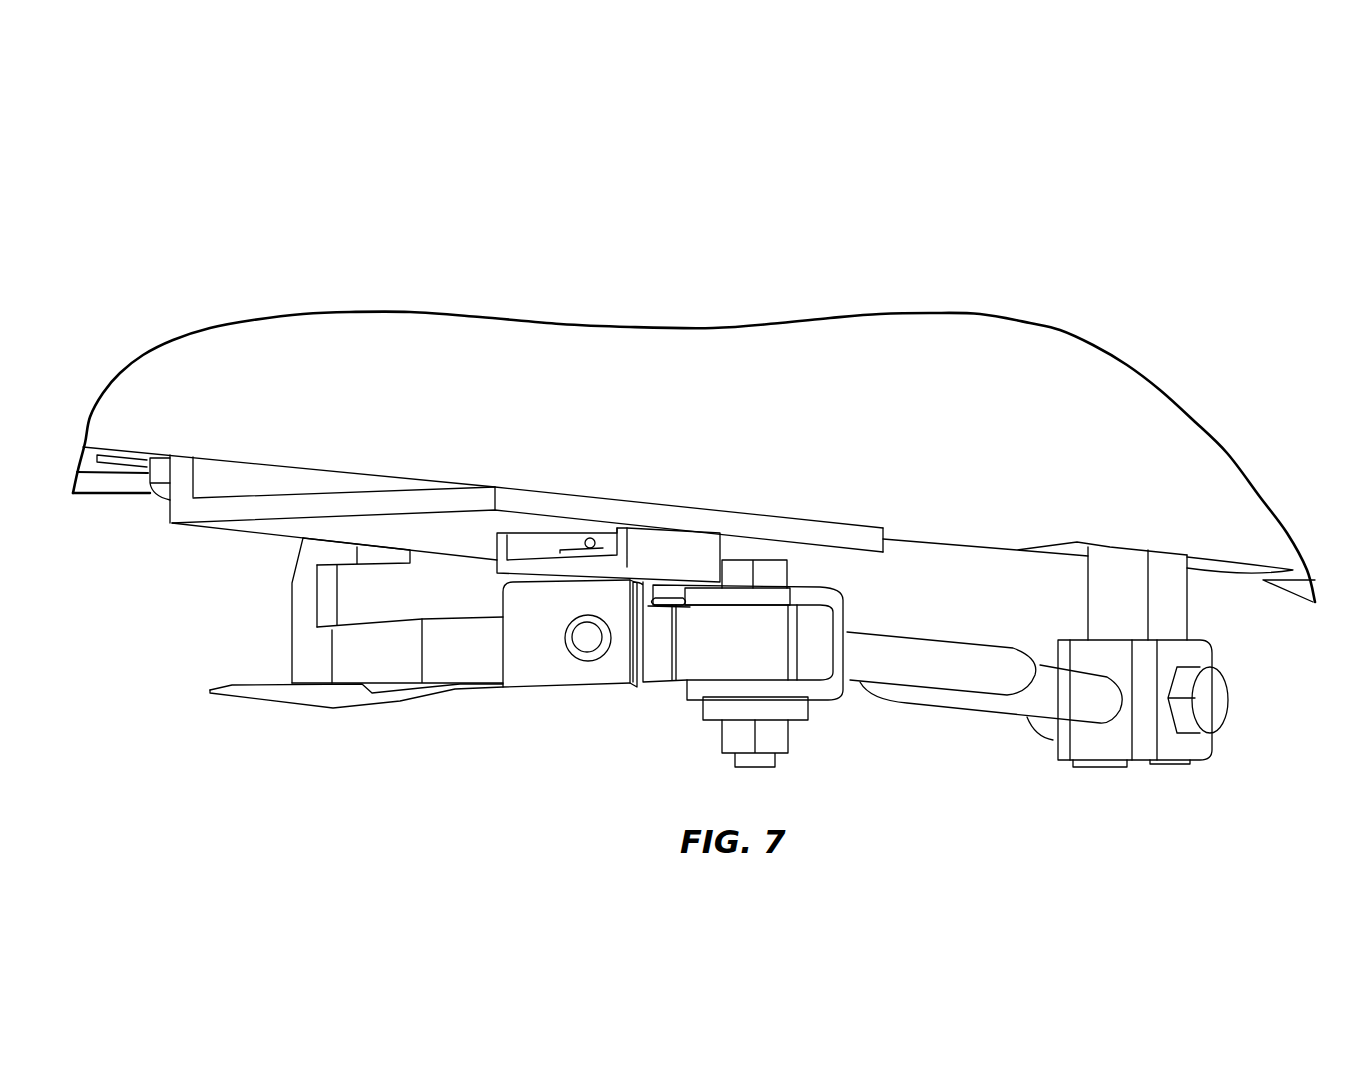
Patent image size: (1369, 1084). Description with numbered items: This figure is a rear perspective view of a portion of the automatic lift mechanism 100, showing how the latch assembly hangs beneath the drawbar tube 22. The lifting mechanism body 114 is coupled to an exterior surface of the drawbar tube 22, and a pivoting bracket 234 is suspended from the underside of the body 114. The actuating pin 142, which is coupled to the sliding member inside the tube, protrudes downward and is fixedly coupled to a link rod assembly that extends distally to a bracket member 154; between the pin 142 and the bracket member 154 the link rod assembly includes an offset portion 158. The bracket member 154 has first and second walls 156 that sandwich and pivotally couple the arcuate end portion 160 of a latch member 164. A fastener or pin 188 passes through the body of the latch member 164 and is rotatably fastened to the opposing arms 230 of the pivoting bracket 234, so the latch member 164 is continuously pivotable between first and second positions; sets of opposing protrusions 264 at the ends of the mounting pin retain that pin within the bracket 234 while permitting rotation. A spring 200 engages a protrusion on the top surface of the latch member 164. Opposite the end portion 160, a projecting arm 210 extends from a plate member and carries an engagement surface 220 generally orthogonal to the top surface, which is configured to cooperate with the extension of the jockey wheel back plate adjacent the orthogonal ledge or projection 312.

The automatic lift mechanism 100 is at (1236, 216).
The drawbar tube 22 is at (927, 338).
The lifting mechanism body 114 is at (188, 503).
The actuating pin 142 is at (1178, 612).
The bracket member 154 is at (843, 614).
The first and second walls 156 is at (797, 600).
The offset portion 158 is at (1000, 706).
The end portion 160 is at (698, 665).
The latch member 164 is at (455, 664).
The fastener or pin 188 is at (587, 642).
The spring 200 is at (665, 597).
The projecting arm 210 is at (291, 666).
The engagement surface 220 is at (334, 588).
The opposing arms 230 is at (540, 668).
The pivoting bracket 234 is at (521, 608).
The sets of opposing protrusions 264 is at (589, 540).
The orthogonal ledge or projection 312 is at (407, 556).